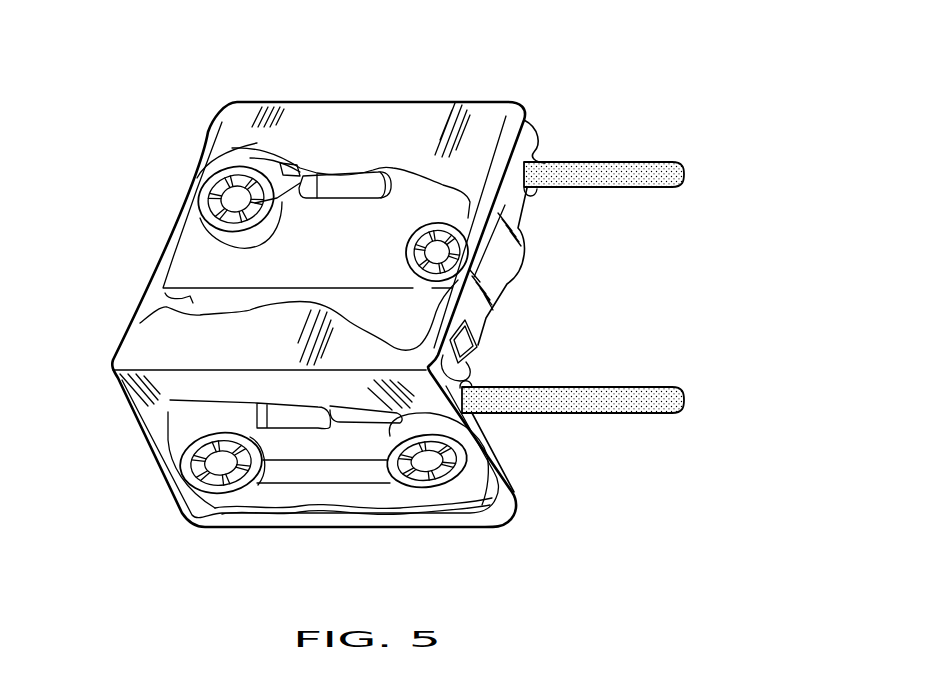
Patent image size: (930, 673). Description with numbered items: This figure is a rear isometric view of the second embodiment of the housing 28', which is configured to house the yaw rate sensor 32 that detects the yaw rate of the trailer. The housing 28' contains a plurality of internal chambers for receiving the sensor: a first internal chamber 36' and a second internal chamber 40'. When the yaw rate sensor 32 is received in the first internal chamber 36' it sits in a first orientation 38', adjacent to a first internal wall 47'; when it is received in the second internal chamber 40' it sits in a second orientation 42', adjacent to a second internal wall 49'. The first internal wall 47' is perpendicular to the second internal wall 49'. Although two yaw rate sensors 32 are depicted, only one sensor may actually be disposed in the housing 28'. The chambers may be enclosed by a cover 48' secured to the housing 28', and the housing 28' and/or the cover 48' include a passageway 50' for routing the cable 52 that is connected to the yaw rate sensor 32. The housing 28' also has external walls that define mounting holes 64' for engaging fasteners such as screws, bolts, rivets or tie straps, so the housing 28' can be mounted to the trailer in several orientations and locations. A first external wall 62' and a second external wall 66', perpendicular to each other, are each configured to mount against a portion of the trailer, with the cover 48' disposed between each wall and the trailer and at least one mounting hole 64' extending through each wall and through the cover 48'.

The housing 28' is at (298, 269).
The yaw rate sensor 32 is at (318, 172).
The first orientation 38' is at (351, 143).
The cover 48' is at (525, 271).
The cable 52 is at (640, 160).
The first internal chamber 36' is at (321, 246).
The mounting holes 64' is at (347, 363).
The first internal wall 47' is at (304, 252).
The passageway 50' is at (549, 288).
The first external wall 62' is at (114, 330).
The second orientation 42' is at (286, 412).
The second internal chamber 40' is at (236, 514).
The second external wall 66' is at (353, 541).
The second internal wall 49' is at (335, 512).